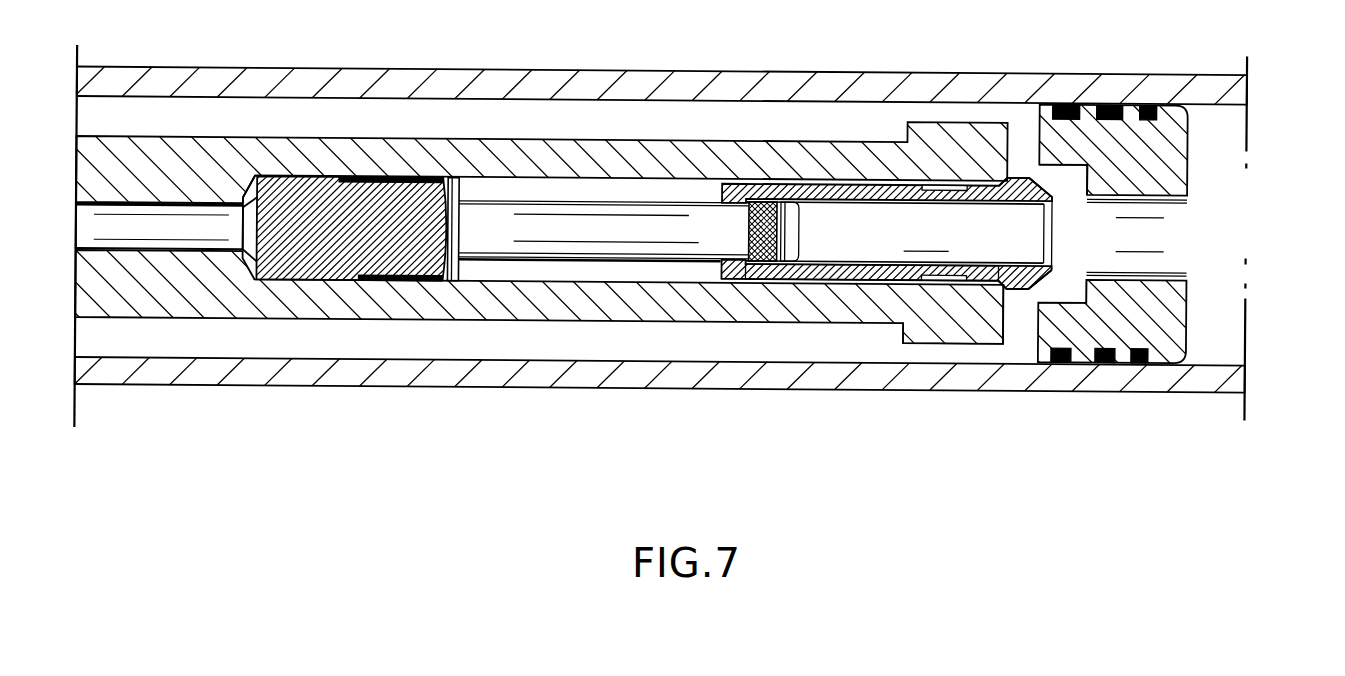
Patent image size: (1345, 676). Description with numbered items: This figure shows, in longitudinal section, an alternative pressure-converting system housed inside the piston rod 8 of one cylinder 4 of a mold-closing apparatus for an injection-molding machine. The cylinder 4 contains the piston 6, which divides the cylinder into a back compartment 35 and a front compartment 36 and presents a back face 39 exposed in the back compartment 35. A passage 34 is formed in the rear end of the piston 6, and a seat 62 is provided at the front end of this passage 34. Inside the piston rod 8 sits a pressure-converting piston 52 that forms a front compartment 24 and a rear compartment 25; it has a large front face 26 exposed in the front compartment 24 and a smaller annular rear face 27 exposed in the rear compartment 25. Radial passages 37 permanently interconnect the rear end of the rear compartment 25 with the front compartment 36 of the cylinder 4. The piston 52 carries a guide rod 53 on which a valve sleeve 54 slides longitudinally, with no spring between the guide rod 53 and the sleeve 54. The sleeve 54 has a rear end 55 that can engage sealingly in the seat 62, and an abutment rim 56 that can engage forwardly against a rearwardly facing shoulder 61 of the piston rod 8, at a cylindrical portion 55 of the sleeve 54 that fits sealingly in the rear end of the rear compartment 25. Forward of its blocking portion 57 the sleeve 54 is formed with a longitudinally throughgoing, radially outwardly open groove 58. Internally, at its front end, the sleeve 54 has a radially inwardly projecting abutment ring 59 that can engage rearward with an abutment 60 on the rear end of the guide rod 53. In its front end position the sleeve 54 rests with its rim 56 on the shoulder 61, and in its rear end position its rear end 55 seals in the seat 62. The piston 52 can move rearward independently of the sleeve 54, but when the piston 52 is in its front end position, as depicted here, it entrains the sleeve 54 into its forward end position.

The cylinder 4 is at (439, 93).
The front compartment 36 is at (342, 120).
The piston rod 8 is at (160, 172).
The front compartment 24 is at (247, 186).
The front face 26 is at (247, 263).
The pressure-converting piston 52 is at (320, 237).
The annular rear face 27 is at (462, 267).
The rear compartment 25 is at (552, 268).
The guide rod 53 is at (613, 242).
The groove 58 is at (793, 190).
The abutment ring 59 is at (735, 210).
The abutment 60 is at (838, 205).
The shoulder 61 is at (1012, 168).
The seat 62 is at (1088, 197).
The piston 6 is at (1153, 312).
The back face 39 is at (1190, 340).
The passage 34 is at (1170, 212).
The back compartment 35 is at (1217, 258).
The valve sleeve 54 is at (845, 272).
The blocking portion 57 is at (985, 295).
The abutment rim 56 is at (1003, 290).
The radial passages 37 is at (1023, 332).
The rear end 55 is at (1042, 280).